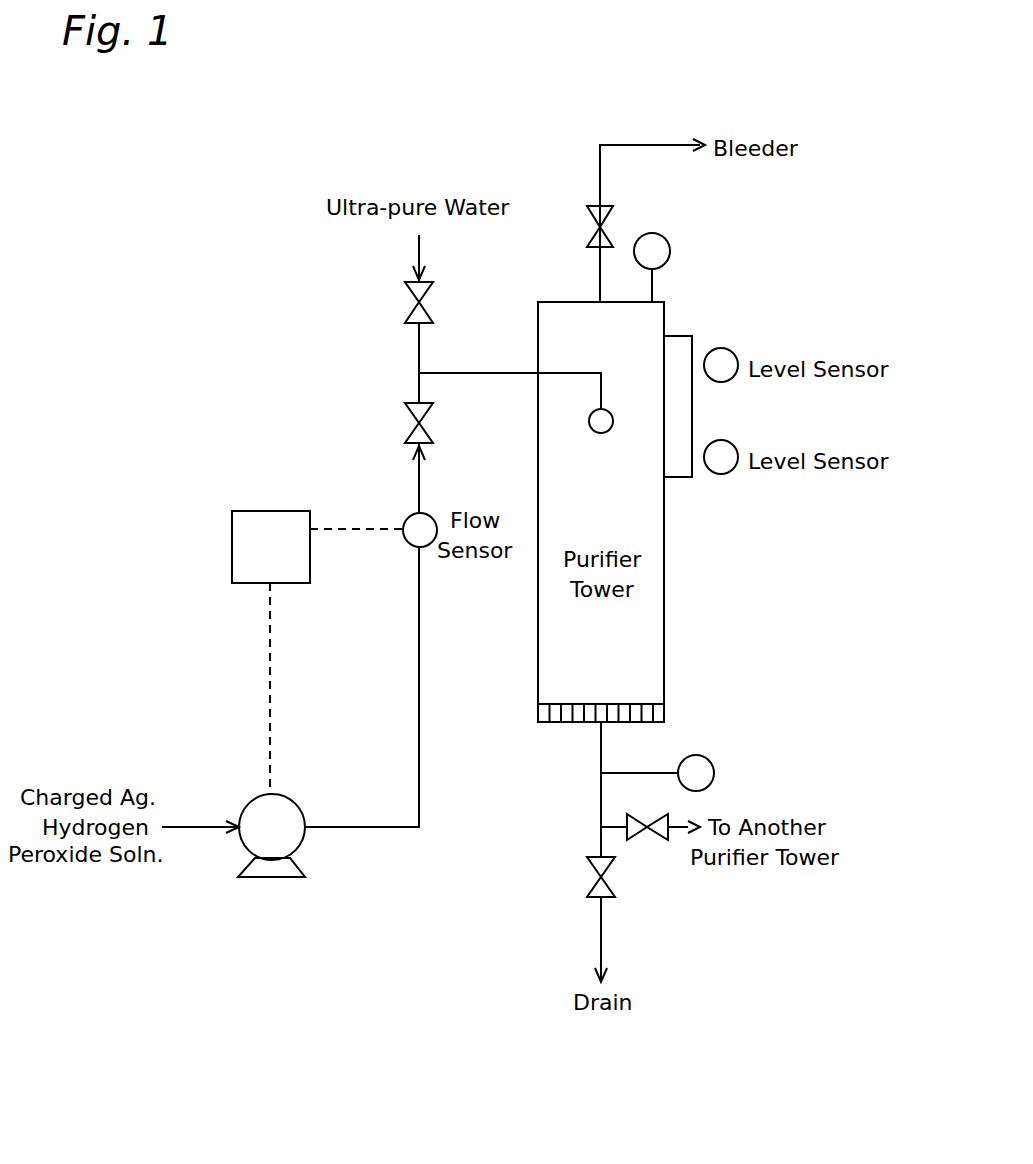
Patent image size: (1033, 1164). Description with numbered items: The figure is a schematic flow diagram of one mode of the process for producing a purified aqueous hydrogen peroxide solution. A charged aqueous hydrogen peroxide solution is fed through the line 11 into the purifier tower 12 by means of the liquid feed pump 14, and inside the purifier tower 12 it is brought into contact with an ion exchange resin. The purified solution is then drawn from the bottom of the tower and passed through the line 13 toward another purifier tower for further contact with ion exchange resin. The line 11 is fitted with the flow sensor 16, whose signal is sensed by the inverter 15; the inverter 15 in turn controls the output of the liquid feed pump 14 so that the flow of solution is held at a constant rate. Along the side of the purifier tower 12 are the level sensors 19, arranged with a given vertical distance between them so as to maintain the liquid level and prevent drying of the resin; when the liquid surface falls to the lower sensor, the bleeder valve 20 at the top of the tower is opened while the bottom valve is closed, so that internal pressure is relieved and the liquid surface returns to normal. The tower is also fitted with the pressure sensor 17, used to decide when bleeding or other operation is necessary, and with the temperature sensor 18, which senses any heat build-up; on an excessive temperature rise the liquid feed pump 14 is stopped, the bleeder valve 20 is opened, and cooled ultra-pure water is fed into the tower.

The line 11 is at (406, 832).
The purifier tower 12 is at (555, 320).
The line 13 is at (601, 773).
The liquid feed pump 14 is at (258, 795).
The inverter 15 is at (238, 543).
The flow sensor 16 is at (406, 543).
The pressure sensor 17 is at (652, 236).
The temperature sensor 18 is at (700, 756).
The level sensor 19 is at (719, 348).
The bleeder valve 20 is at (595, 206).